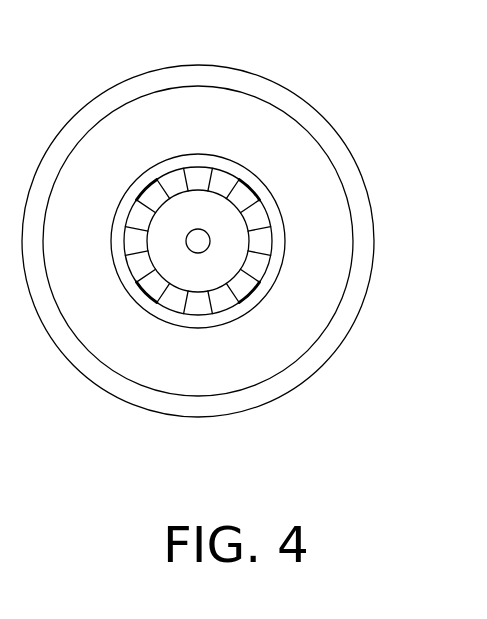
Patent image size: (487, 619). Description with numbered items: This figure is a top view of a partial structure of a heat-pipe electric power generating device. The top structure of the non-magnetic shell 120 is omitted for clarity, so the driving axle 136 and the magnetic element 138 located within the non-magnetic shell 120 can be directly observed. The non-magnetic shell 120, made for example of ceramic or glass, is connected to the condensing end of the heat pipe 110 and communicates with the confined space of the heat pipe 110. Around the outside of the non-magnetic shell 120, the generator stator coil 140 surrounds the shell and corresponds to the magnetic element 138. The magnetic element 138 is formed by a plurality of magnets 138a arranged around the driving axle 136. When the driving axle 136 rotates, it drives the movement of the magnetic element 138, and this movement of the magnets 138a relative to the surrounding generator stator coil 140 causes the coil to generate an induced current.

The heat pipe 110 is at (357, 282).
The non-magnetic shell 120 is at (274, 212).
The driving axle 136 is at (198, 238).
The magnetic element 138 is at (228, 306).
The magnet 138a is at (152, 282).
The generator stator coil 140 is at (333, 237).